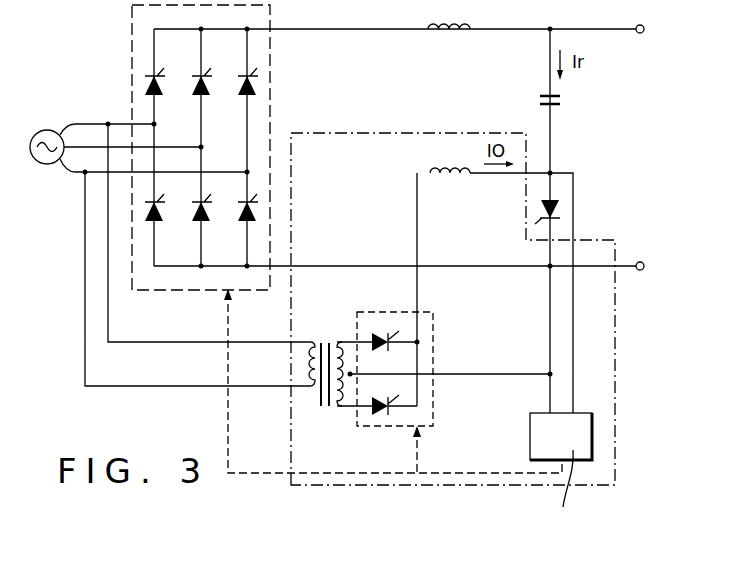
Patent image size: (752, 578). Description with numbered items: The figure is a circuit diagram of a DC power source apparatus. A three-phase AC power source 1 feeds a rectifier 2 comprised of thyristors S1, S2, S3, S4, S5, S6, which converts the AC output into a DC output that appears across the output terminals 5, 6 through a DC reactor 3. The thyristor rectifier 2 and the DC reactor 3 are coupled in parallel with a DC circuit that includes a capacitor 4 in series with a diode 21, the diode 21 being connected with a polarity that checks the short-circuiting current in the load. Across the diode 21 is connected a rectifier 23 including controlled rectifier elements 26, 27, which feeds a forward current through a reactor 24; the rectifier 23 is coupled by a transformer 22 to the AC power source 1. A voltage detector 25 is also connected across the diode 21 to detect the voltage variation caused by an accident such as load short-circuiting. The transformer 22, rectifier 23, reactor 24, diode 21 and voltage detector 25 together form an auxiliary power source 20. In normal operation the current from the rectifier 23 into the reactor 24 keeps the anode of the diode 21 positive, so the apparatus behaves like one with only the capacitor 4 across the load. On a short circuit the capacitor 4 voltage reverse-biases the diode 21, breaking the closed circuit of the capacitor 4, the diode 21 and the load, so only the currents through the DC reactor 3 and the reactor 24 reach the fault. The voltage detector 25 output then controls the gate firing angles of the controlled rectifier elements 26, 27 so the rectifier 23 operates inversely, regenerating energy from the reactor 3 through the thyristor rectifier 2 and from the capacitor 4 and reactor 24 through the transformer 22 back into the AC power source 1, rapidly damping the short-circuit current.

The AC power source 1 is at (50, 166).
The rectifier 2 is at (275, 94).
The thyristor S1 is at (166, 78).
The thyristor S2 is at (212, 78).
The thyristor S3 is at (258, 76).
The thyristor S4 is at (162, 216).
The thyristor S5 is at (208, 216).
The thyristor S6 is at (240, 207).
The DC reactor 3 is at (449, 38).
The capacitor 4 is at (563, 100).
The output terminal 5 is at (640, 34).
The output terminal 6 is at (640, 262).
The auxiliary power source 20 is at (617, 341).
The diode 21 is at (538, 211).
The transformer 22 is at (326, 338).
The rectifier 23 is at (437, 405).
The reactor 24 is at (449, 182).
The voltage detector 25 is at (534, 450).
The controlled rectifier element 26 is at (381, 330).
The controlled rectifier element 27 is at (379, 416).